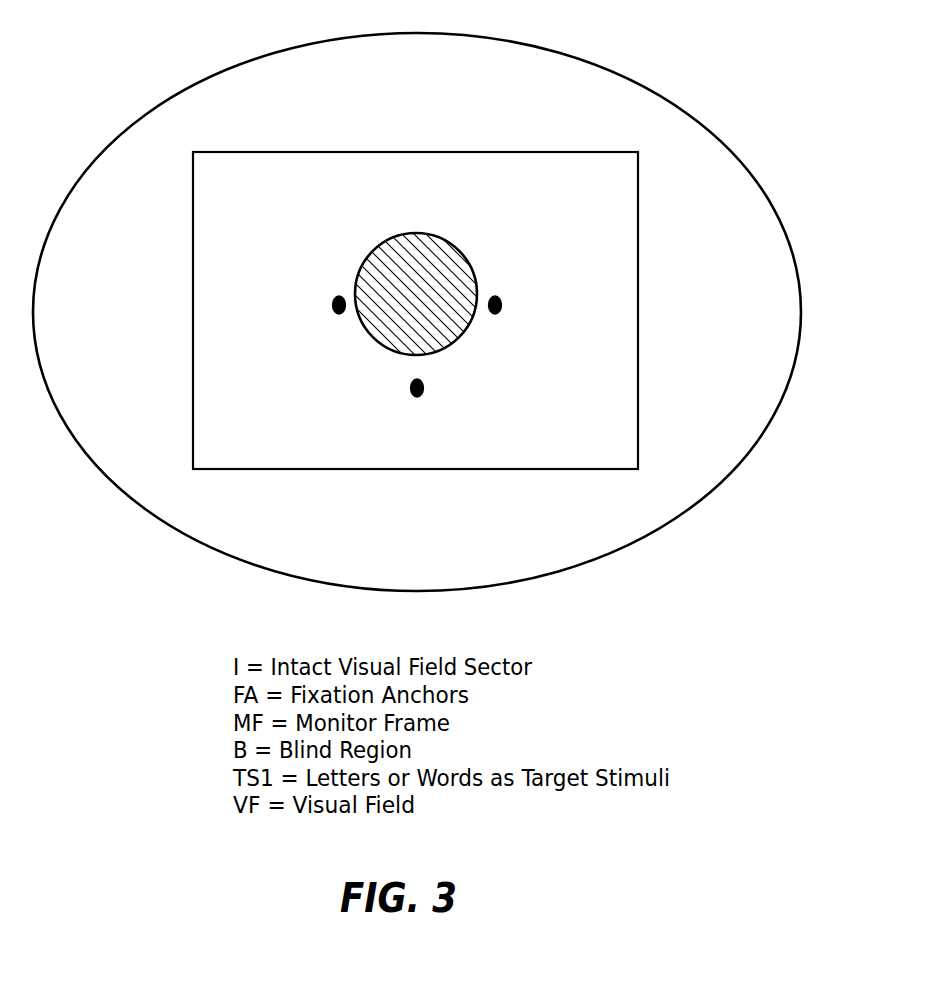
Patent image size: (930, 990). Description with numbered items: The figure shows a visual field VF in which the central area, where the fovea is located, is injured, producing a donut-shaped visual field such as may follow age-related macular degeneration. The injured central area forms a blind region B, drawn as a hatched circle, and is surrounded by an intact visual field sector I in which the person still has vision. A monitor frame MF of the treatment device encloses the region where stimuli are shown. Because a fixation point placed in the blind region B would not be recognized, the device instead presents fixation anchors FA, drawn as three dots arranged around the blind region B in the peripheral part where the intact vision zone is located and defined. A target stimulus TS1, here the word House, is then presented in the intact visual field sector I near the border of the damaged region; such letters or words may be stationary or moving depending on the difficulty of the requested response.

The intact visual field sector I is at (290, 517).
The fixation anchors FA is at (417, 398).
The monitor frame MF is at (638, 378).
The blind region B is at (473, 258).
The target stimuli TS1 is at (418, 205).
The visual field VF is at (172, 530).